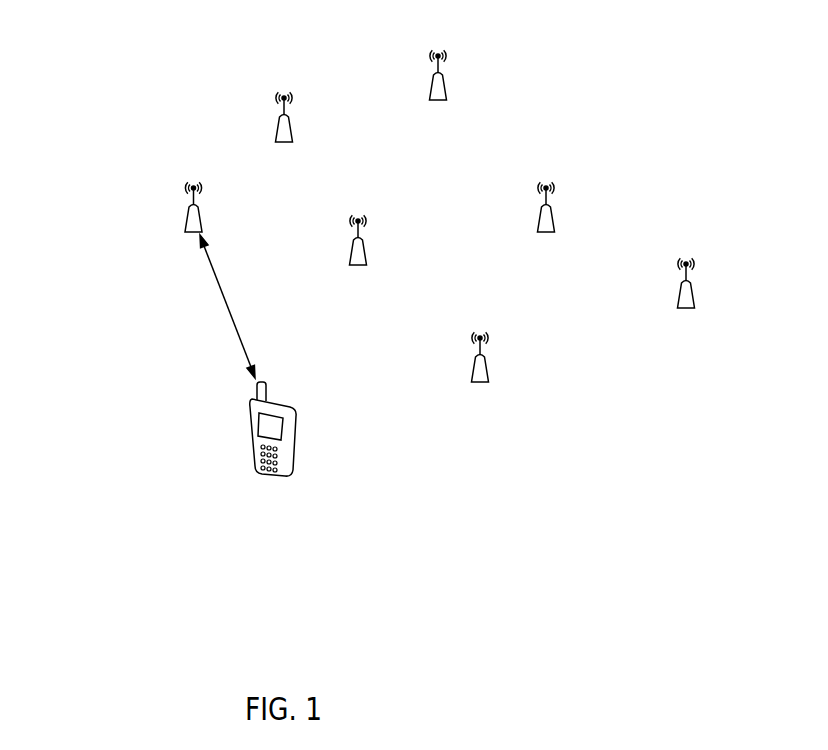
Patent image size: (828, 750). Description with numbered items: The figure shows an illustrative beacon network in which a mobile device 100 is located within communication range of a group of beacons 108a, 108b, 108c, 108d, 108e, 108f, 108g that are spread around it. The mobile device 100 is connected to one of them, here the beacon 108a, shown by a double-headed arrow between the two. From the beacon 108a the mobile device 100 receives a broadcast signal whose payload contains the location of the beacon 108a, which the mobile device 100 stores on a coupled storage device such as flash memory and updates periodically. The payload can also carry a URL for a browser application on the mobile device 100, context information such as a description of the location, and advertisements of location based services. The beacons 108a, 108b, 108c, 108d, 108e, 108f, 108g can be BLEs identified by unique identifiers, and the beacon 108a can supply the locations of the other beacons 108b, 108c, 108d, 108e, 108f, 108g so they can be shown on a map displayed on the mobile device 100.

The mobile device 100 is at (295, 476).
The beacon 108a is at (186, 228).
The beacon 108b is at (273, 138).
The beacon 108c is at (428, 97).
The beacon 108d is at (348, 262).
The beacon 108e is at (537, 228).
The beacon 108f is at (470, 378).
The beacon 108g is at (675, 303).